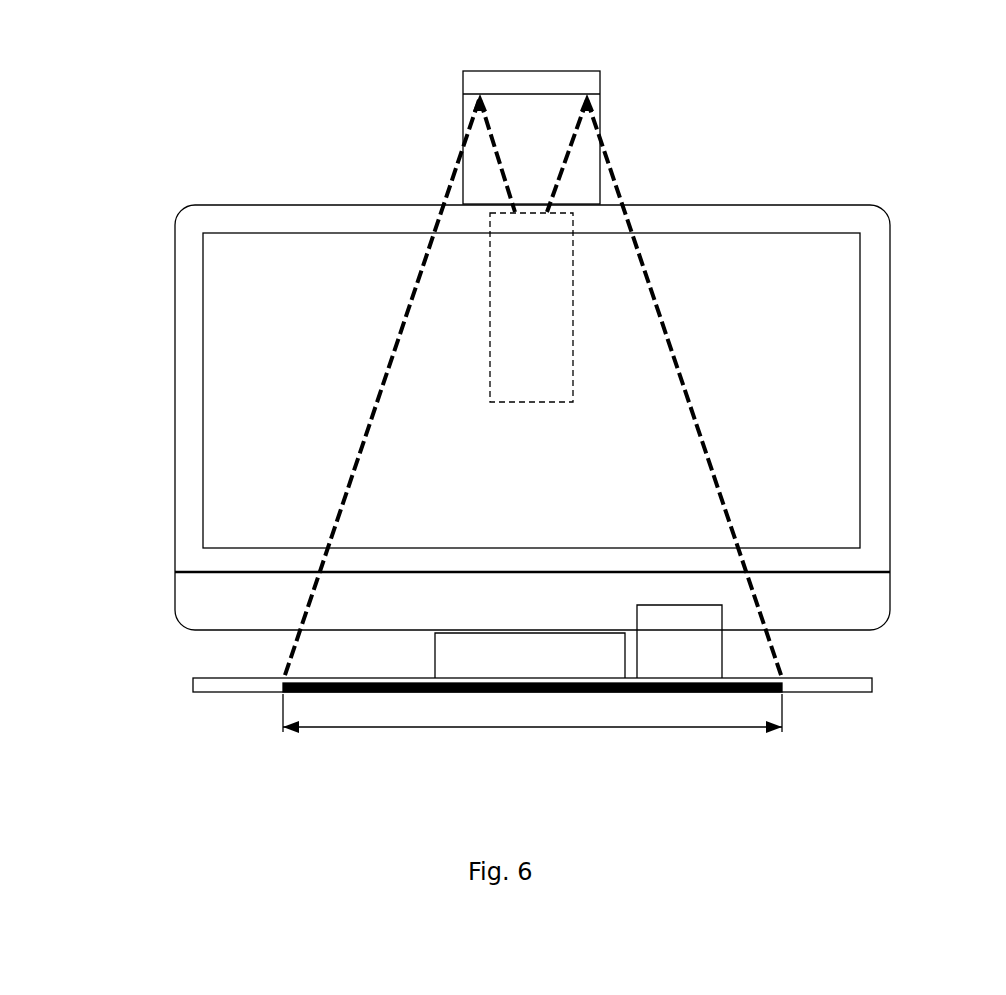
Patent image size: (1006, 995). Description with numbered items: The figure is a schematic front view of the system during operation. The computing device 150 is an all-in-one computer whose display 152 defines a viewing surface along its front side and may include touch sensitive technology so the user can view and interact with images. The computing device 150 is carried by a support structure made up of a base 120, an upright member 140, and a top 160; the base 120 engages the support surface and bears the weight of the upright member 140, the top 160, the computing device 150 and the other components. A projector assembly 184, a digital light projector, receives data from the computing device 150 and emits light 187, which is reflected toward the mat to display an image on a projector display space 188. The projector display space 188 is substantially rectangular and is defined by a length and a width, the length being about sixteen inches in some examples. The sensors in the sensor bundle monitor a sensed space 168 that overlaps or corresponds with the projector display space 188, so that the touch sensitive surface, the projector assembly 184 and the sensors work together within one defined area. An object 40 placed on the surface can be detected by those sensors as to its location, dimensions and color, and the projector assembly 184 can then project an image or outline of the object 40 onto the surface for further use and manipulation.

The top 160 is at (597, 62).
The upright member 140 is at (607, 147).
The light 187 is at (460, 165).
The computing device 150 is at (893, 288).
The display 152 is at (293, 291).
The projector assembly 184 is at (490, 318).
The object 40 is at (693, 605).
The base 120 is at (193, 677).
The projector display space 188 is at (343, 677).
The sensed space 168 is at (408, 594).